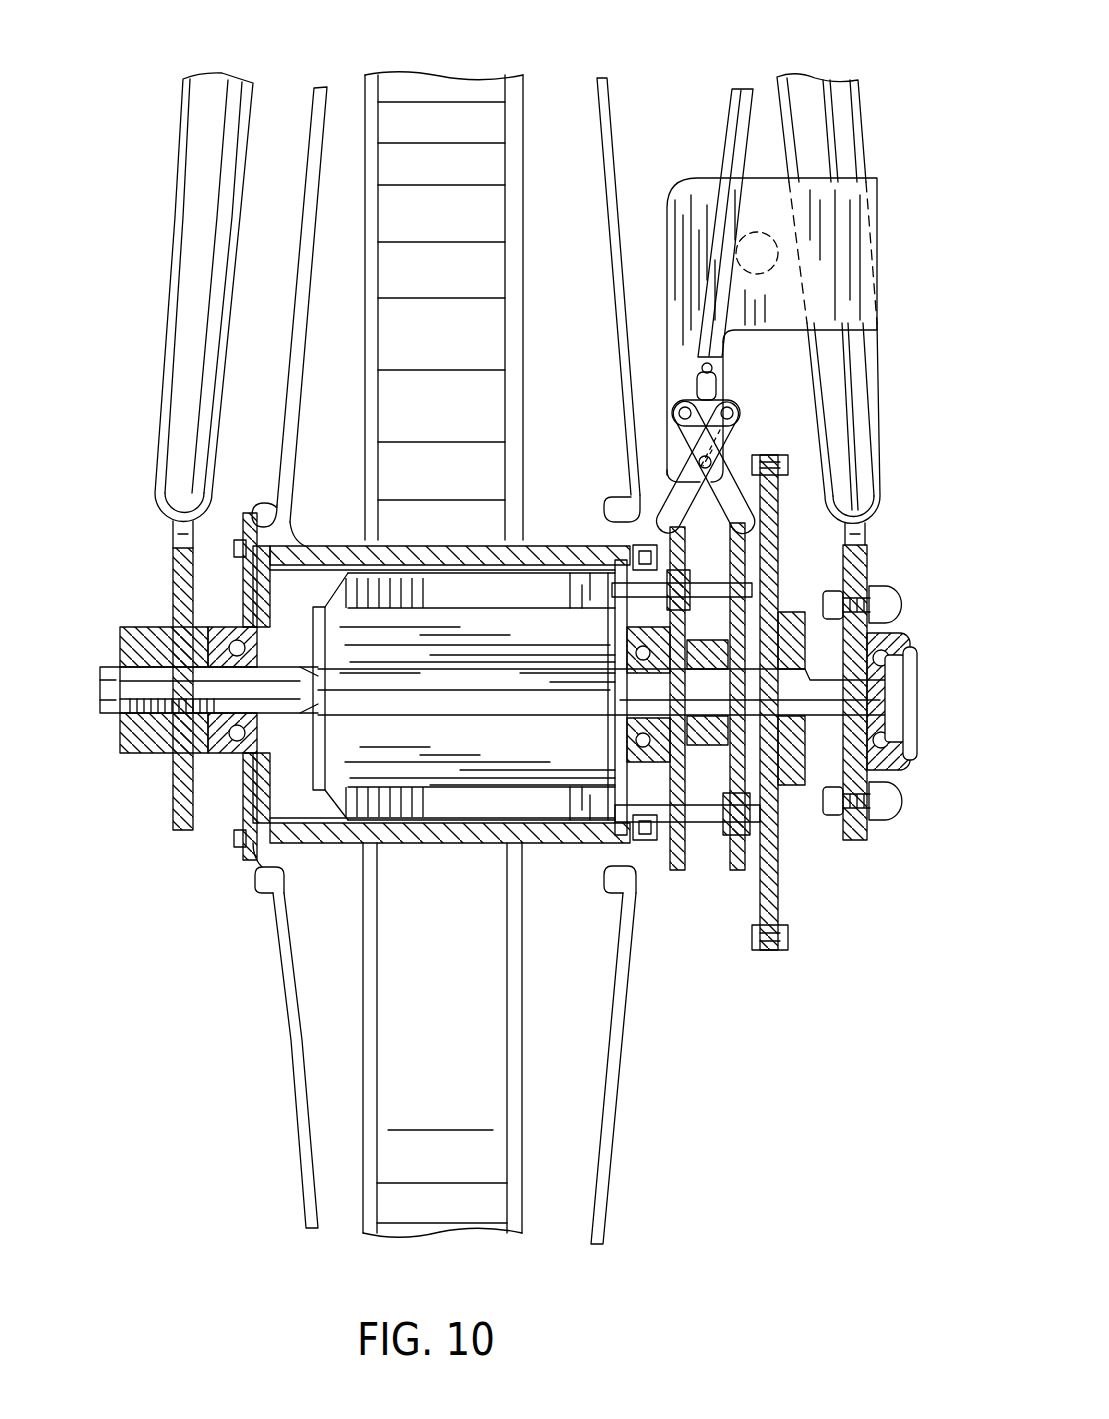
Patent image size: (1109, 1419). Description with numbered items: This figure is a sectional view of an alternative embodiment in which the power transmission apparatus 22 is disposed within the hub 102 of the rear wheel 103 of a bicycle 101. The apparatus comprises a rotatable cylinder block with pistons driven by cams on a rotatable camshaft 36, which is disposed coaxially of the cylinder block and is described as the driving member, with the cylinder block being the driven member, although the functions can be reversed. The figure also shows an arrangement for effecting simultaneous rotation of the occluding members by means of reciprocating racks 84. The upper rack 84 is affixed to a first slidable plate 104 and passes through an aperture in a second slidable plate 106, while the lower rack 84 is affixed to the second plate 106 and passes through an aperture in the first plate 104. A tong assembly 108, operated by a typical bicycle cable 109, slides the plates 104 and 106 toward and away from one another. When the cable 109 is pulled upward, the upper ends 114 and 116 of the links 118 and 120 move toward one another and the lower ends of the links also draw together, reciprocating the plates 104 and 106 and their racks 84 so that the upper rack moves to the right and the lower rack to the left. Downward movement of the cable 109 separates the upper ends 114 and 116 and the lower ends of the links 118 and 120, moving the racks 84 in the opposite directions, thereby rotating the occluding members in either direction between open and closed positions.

The power transmission apparatus 22 is at (381, 731).
The camshaft 36 is at (841, 710).
The rack 84 is at (602, 580).
The bicycle 101 is at (203, 106).
The hub 102 is at (456, 549).
The rear wheel 103 is at (462, 125).
The first slidable plate 104 is at (672, 872).
The second slidable plate 106 is at (736, 872).
The tong assembly 108 is at (757, 408).
The cable 109 is at (712, 370).
The upper end of link 114 is at (684, 413).
The upper end of link 116 is at (733, 388).
The link 118 is at (681, 496).
The link 120 is at (745, 503).